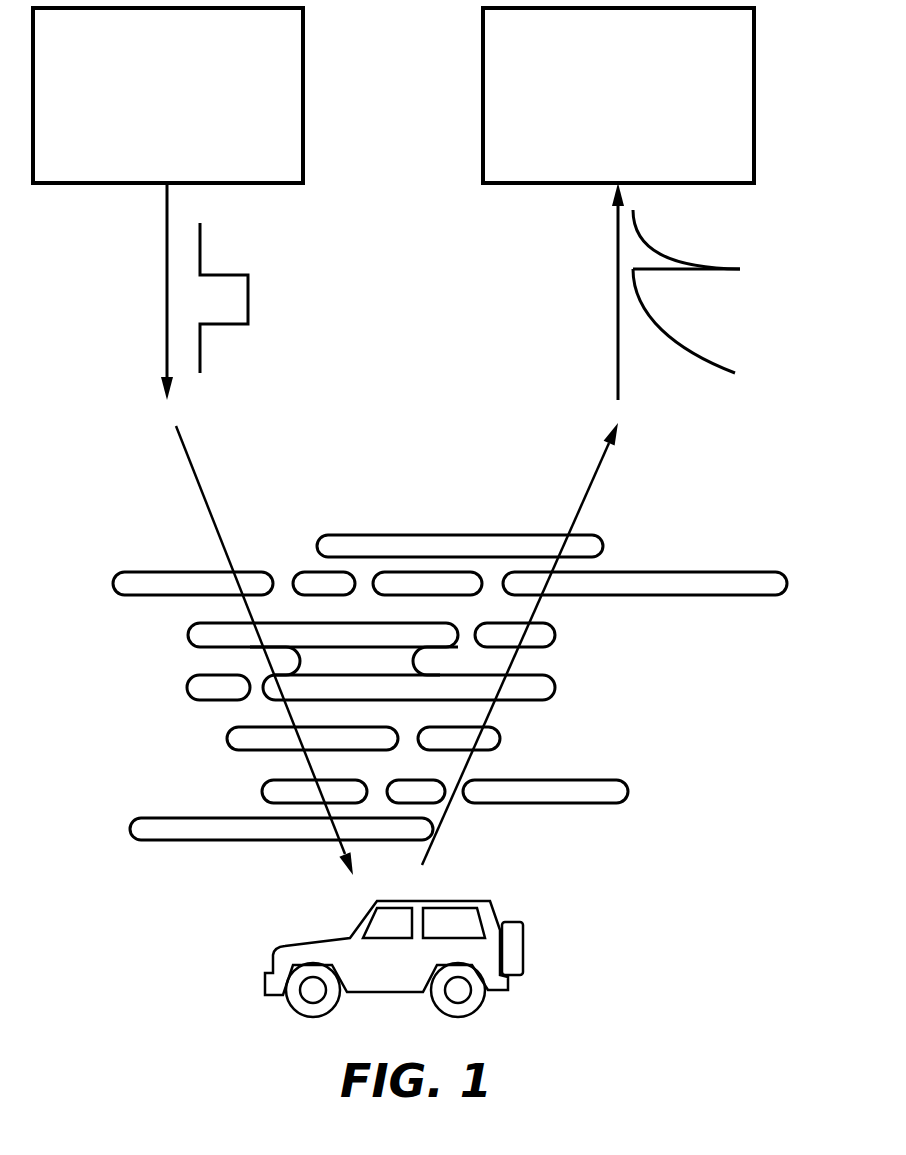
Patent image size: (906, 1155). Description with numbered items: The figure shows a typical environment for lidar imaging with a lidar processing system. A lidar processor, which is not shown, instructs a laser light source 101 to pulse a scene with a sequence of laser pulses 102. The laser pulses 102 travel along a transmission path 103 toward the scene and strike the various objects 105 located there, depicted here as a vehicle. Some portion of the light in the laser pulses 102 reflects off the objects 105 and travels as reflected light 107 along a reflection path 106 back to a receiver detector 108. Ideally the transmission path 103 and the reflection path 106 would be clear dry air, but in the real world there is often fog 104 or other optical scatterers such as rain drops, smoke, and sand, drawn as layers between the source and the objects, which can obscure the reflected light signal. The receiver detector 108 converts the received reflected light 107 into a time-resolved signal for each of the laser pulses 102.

The laser light source 101 is at (145, 142).
The laser pulses 102 is at (248, 298).
The transmission path 103 is at (202, 482).
The fog 104 is at (203, 752).
The objects 105 is at (513, 922).
The reflection path 106 is at (590, 488).
The reflected light 107 is at (728, 269).
The receiver detector 108 is at (600, 124).